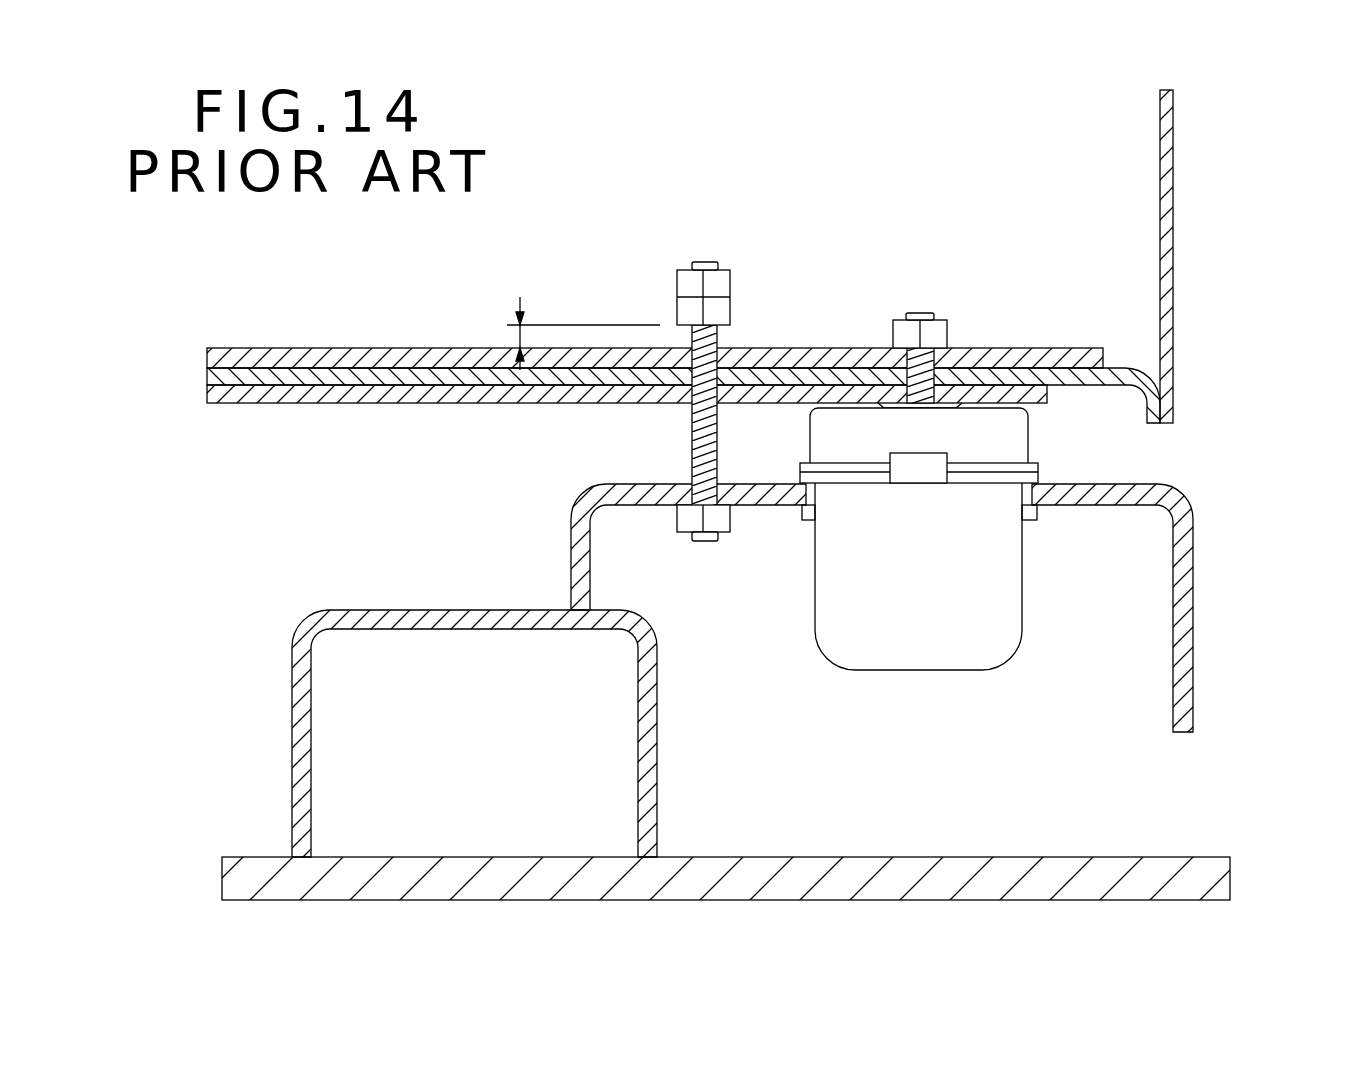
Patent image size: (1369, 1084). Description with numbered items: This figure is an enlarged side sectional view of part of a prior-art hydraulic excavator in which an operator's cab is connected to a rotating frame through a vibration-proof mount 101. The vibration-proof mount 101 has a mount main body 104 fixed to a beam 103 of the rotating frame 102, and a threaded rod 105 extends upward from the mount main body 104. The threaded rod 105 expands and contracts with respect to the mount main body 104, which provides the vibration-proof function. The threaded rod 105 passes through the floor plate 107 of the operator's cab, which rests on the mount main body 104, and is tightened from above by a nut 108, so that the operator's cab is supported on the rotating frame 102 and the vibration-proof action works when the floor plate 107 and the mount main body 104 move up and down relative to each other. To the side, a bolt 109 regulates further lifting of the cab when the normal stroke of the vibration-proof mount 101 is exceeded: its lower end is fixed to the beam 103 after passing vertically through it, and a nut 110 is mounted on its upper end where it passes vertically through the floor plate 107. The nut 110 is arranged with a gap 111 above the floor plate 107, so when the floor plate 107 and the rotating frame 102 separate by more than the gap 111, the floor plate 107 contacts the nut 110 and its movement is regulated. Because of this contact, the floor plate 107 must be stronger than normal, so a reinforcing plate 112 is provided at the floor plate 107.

The vibration-proof mount 101 is at (992, 702).
The rotating frame 102 is at (1161, 857).
The beam 103 is at (1195, 642).
The mount main body 104 is at (913, 655).
The threaded rod 105 is at (921, 313).
The floor plate 107 is at (207, 378).
The nut 108 is at (949, 337).
The bolt 109 is at (690, 440).
The nut 110 is at (731, 282).
The gap 111 is at (518, 322).
The reinforcing plate 112 is at (1094, 347).